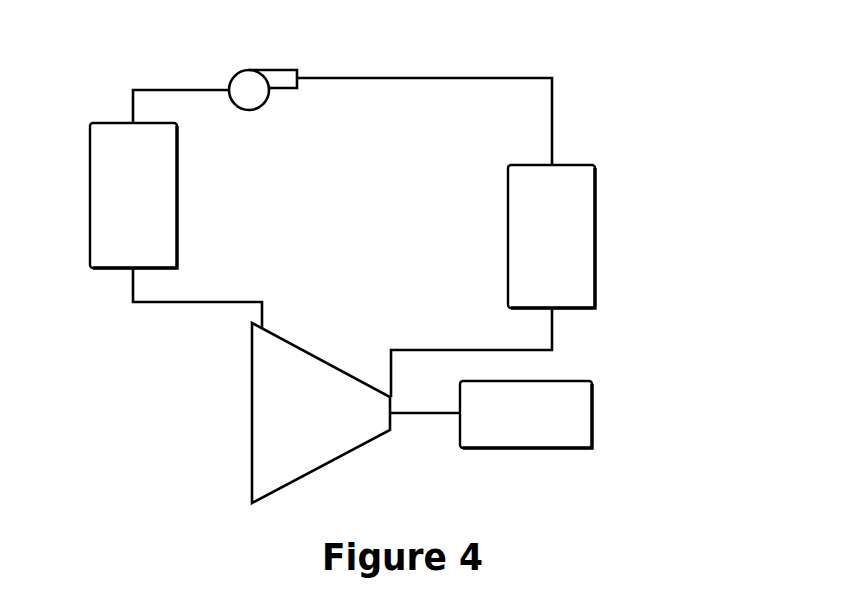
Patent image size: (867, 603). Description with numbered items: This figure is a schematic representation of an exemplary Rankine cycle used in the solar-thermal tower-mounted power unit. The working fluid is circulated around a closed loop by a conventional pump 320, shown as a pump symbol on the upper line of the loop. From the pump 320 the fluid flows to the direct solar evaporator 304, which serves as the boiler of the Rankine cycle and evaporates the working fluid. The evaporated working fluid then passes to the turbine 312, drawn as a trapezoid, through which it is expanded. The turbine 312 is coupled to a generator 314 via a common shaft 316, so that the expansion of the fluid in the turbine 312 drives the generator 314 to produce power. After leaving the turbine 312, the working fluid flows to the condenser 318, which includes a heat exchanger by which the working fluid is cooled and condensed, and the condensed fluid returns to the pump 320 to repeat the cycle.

The direct solar evaporator 304 is at (562, 240).
The turbine 312 is at (307, 433).
The generator 314 is at (557, 422).
The common shaft 316 is at (428, 415).
The condenser 318 is at (115, 185).
The pump 320 is at (251, 88).